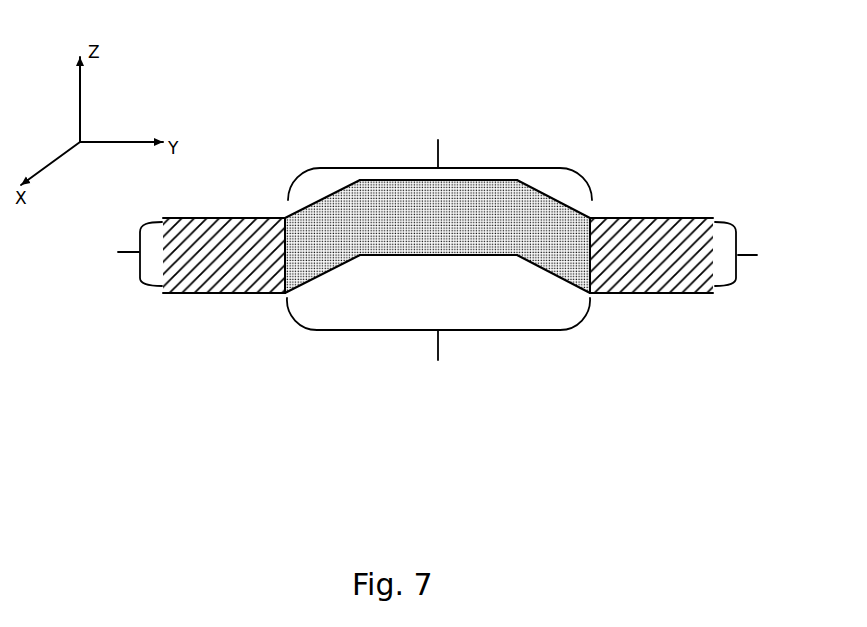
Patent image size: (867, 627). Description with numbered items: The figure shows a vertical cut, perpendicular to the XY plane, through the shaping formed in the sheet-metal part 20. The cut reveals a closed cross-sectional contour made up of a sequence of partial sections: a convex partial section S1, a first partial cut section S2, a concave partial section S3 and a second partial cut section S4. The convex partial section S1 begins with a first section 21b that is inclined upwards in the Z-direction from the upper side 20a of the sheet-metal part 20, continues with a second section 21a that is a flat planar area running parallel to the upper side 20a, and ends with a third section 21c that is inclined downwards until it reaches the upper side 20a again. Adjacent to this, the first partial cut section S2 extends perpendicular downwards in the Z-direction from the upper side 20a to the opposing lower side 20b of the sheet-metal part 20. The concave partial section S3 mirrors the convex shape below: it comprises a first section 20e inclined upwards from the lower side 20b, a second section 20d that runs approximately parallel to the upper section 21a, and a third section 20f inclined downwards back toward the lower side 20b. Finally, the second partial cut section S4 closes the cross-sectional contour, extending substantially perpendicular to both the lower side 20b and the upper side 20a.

The sheet-metal part 20 is at (549, 92).
The upper side 20a is at (200, 218).
The lower side 20b is at (207, 293).
The second section of the concave partial section 20d is at (397, 257).
The first section of the concave partial section 20e is at (553, 278).
The third section of the concave partial section 20f is at (298, 295).
The second section of the convex partial section 21a is at (473, 180).
The first section of the convex partial section 21b is at (545, 195).
The third section of the convex partial section 21c is at (320, 198).
The convex partial section S1 is at (440, 154).
The first partial cut section S2 is at (755, 254).
The concave partial section S3 is at (438, 344).
The second partial cut section S4 is at (120, 254).